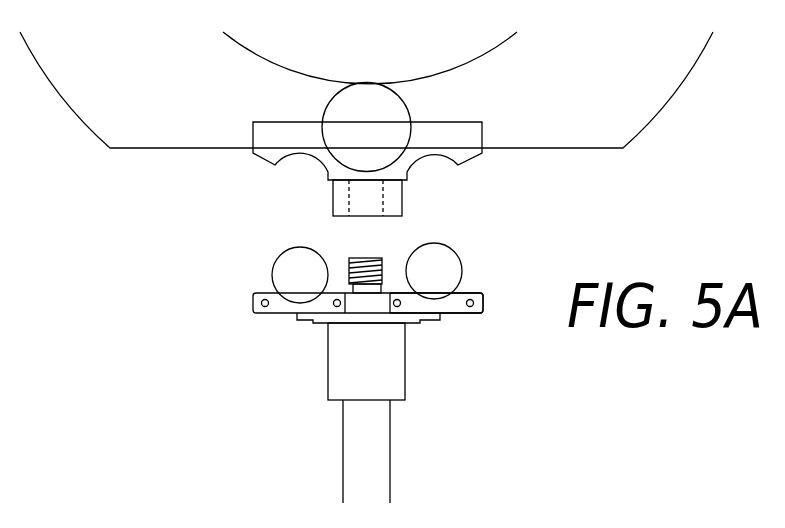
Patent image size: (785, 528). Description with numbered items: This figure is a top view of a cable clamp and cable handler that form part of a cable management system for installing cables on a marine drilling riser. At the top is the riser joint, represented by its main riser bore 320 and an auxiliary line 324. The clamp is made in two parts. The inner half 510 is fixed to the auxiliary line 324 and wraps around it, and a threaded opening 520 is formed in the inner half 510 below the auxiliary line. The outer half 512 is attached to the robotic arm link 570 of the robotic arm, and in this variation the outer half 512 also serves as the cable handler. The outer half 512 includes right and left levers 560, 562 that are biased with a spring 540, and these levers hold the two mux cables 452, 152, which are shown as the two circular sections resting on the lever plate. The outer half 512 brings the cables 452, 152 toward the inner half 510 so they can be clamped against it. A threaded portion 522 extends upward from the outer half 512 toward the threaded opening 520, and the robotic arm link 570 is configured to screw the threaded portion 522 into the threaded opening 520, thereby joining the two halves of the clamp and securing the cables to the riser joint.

The main riser bore 320 is at (388, 51).
The auxiliary line 324 is at (342, 113).
The inner half 510 is at (467, 133).
The threaded opening 520 is at (363, 204).
The threaded portion 522 is at (359, 257).
The mux cable 452 is at (292, 268).
The MUX cable 152 is at (455, 268).
The right lever 560 is at (278, 305).
The left lever 562 is at (452, 308).
The spring 540 is at (313, 325).
The outer half 512 is at (429, 332).
The robotic arm link 570 is at (353, 427).